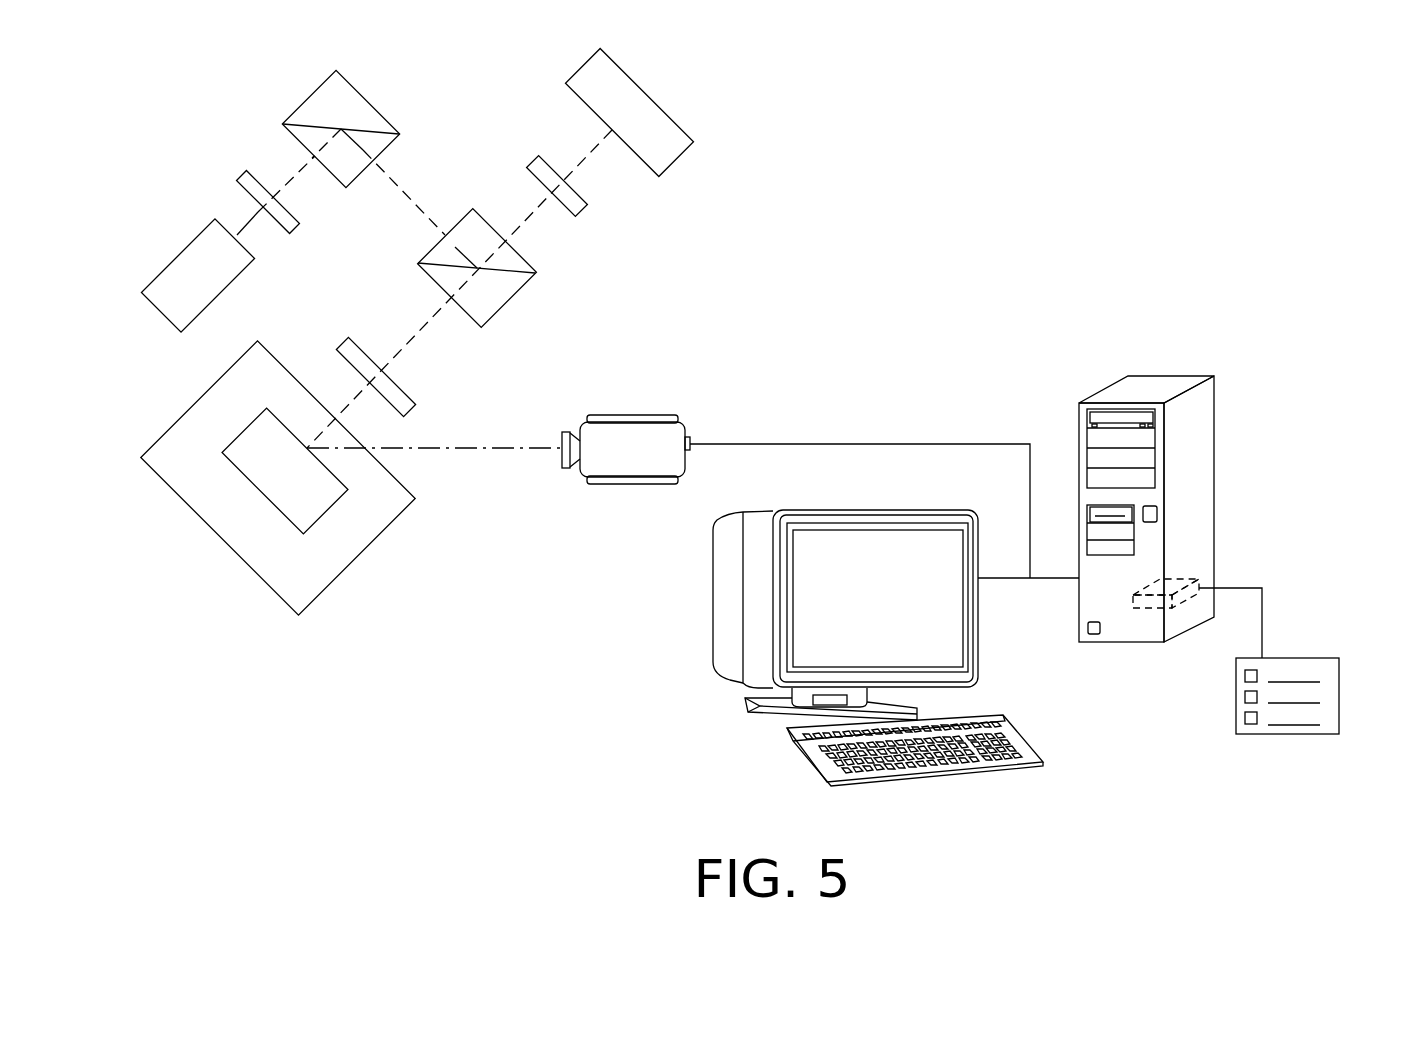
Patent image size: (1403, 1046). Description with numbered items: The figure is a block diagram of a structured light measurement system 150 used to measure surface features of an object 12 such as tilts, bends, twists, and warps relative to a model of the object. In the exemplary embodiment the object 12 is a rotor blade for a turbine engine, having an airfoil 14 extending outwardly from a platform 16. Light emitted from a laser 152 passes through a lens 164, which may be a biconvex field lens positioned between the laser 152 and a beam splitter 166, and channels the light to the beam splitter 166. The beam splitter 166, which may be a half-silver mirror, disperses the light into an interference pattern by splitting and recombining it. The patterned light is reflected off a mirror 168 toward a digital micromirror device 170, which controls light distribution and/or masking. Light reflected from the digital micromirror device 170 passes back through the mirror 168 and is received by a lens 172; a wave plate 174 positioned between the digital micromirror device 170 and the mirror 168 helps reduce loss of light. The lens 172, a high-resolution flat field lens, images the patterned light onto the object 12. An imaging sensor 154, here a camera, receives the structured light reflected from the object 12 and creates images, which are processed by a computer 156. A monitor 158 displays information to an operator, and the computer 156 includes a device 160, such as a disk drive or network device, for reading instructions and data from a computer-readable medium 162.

The object 12 is at (241, 105).
The airfoil 14 is at (315, 497).
The platform 16 is at (312, 587).
The structured light measurement system 150 is at (778, 148).
The laser 152 is at (233, 277).
The imaging sensor 154 is at (630, 415).
The computer 156 is at (1103, 390).
The monitor 158 is at (713, 588).
The device 160 is at (1150, 609).
The computer-readable medium 162 is at (1303, 658).
The lens 164 is at (293, 230).
The beam splitter 166 is at (373, 97).
The mirror 168 is at (510, 302).
The digital micromirror device 170 is at (577, 77).
The lens 172 is at (413, 412).
The wave plate 174 is at (582, 210).